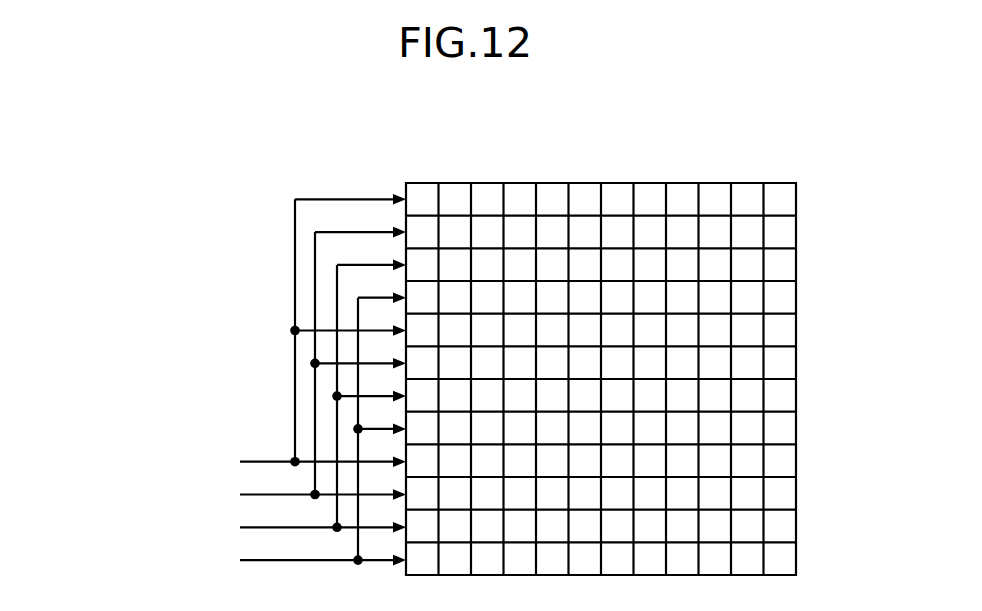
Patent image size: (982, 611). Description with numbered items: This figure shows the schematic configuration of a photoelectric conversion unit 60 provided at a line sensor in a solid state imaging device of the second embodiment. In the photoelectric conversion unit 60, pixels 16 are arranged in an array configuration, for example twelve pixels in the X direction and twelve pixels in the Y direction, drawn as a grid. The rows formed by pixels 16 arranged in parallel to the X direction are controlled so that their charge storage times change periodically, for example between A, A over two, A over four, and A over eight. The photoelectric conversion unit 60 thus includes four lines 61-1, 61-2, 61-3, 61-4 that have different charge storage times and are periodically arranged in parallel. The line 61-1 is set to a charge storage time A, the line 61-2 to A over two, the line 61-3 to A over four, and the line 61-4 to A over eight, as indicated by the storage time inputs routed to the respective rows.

The photoelectric conversion unit 60 is at (633, 336).
The pixel 16 is at (785, 233).
The line 61-1 is at (806, 457).
The line 61-2 is at (806, 490).
The line 61-3 is at (806, 522).
The line 61-4 is at (806, 555).